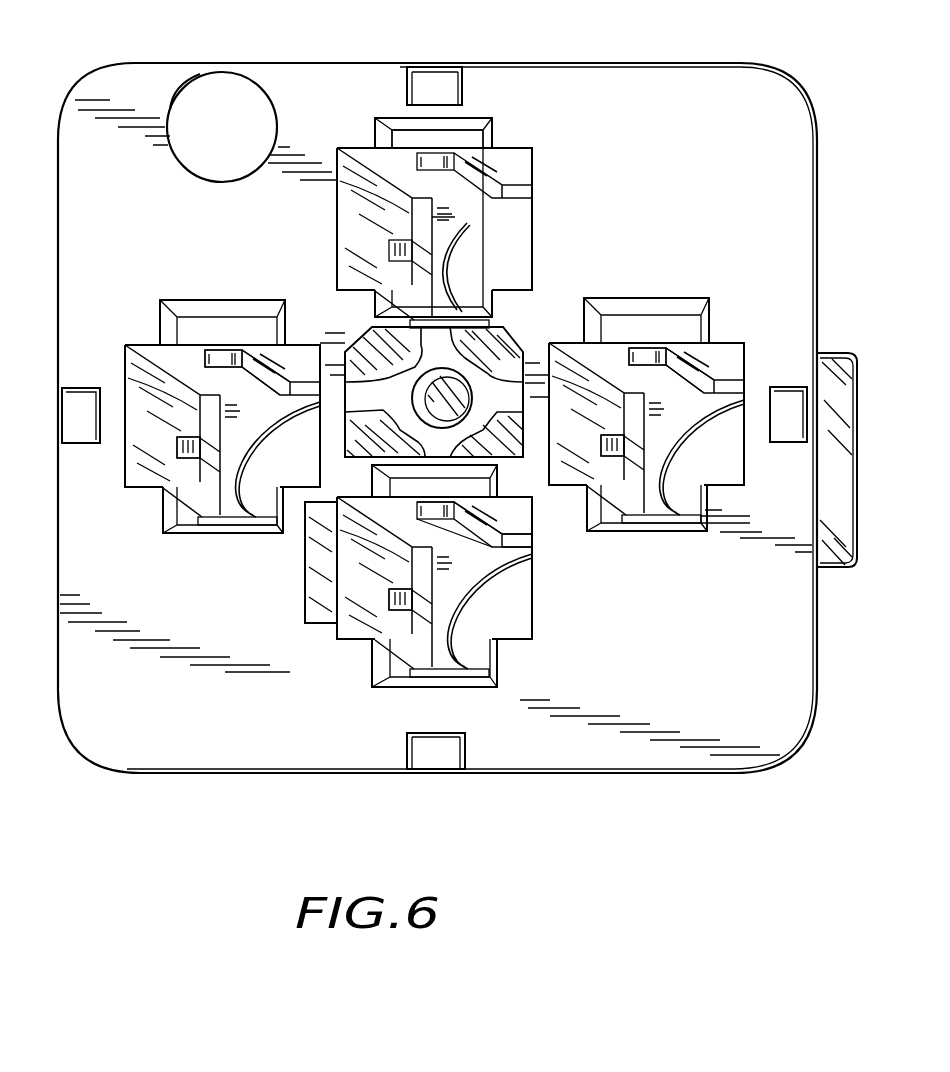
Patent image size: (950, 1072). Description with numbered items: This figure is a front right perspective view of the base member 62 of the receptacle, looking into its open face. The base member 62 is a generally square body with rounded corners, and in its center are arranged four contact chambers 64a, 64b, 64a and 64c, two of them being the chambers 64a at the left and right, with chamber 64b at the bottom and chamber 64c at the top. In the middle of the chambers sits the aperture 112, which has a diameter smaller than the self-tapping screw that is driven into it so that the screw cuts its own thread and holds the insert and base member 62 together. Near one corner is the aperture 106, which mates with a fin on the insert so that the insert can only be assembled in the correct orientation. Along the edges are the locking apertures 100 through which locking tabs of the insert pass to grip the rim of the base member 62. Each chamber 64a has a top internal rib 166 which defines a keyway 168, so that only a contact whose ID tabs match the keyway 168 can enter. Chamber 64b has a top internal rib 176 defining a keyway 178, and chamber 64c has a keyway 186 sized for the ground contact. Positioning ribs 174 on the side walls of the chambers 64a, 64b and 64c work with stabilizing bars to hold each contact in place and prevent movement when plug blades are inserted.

The base member 62 is at (675, 780).
The aperture 106 is at (222, 72).
The locking aperture 100 is at (445, 748).
The aperture 112 is at (457, 387).
The chamber 64a is at (127, 375).
The chamber 64b is at (457, 567).
The chamber 64c is at (337, 152).
The top internal rib 166 is at (213, 350).
The keyway 168 is at (260, 348).
The positioning rib 174 is at (178, 460).
The top internal rib 176 is at (433, 508).
The keyway 178 is at (520, 523).
The keyway 186 is at (452, 143).